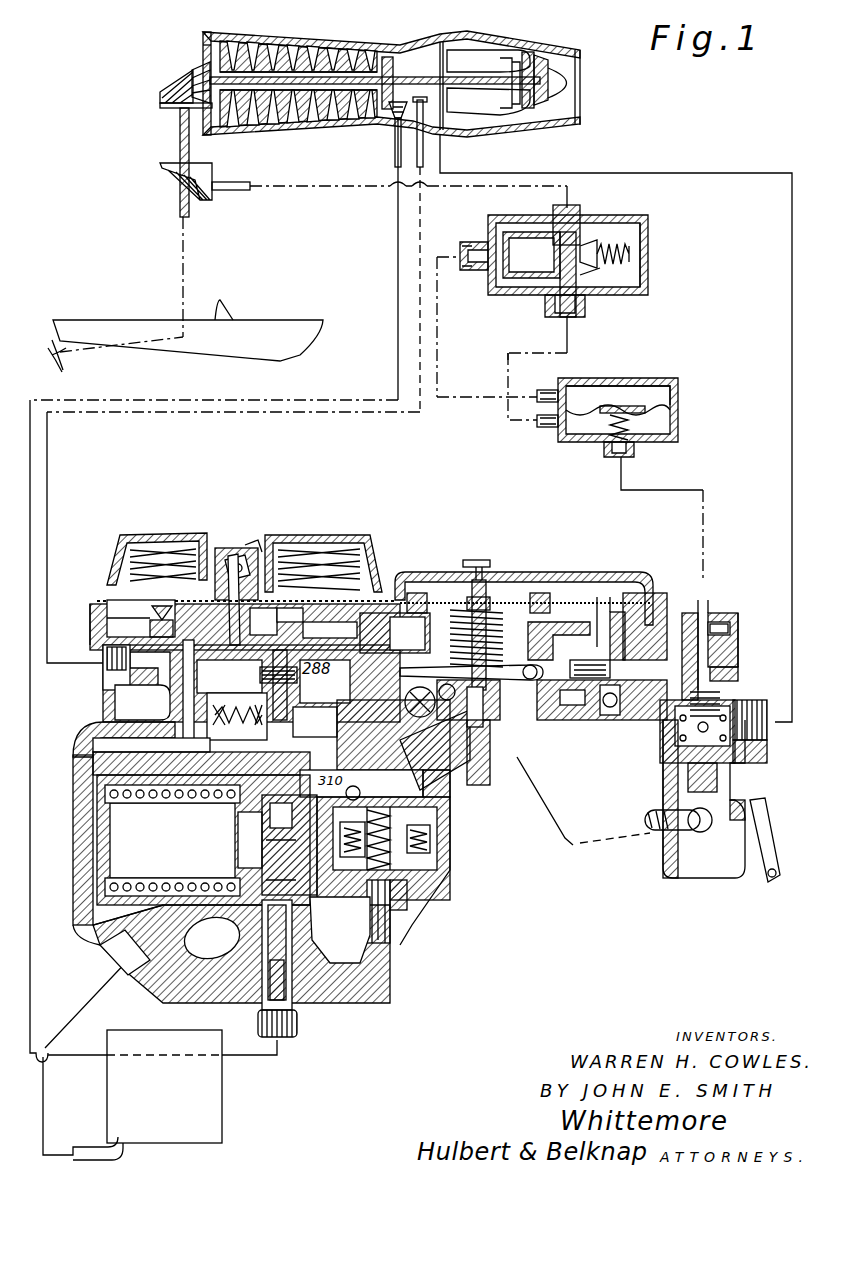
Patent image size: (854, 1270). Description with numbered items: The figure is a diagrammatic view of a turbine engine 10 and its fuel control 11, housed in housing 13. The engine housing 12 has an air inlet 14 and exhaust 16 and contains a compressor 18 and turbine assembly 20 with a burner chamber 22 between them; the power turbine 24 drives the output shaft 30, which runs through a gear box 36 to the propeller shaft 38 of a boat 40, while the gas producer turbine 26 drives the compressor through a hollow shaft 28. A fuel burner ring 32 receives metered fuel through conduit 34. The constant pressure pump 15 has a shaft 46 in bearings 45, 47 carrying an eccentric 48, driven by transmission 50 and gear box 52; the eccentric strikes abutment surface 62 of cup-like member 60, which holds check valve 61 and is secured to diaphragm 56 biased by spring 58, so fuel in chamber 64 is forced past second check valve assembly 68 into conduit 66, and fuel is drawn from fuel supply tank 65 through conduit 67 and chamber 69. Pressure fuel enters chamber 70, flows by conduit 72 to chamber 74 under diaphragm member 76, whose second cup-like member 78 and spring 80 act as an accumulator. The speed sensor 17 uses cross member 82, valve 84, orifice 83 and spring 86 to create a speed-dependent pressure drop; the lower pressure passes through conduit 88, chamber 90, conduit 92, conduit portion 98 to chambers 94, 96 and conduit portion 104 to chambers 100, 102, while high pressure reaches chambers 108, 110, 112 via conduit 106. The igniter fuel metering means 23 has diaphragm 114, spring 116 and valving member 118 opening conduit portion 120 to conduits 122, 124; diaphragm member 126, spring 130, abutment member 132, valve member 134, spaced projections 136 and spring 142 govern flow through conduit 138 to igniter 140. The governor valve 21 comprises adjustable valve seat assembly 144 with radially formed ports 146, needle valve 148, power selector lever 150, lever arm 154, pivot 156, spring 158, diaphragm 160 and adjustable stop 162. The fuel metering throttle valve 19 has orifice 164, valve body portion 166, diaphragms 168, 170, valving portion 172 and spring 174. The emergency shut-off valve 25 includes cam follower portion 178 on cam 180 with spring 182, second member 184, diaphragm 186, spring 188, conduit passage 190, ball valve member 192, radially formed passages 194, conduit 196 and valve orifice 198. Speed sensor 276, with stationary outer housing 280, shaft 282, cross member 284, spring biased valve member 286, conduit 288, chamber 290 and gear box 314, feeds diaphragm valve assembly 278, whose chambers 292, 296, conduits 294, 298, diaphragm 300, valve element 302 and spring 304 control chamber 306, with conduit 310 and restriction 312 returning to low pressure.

The turbine engine 10 is at (322, 42).
The fuel control 11 is at (486, 890).
The housing 12 is at (388, 56).
The housing 13 is at (335, 540).
The air inlet 14 is at (208, 46).
The constant pressure pump 15 is at (417, 934).
The exhaust 16 is at (582, 105).
The speed sensor 17 is at (333, 742).
The compressor 18 is at (290, 128).
The fuel metering throttle valve 19 is at (622, 590).
The turbine assembly 20 is at (580, 70).
The governor valve 21 is at (530, 596).
The burner chamber 22 is at (512, 100).
The igniter fuel metering means 23 is at (226, 540).
The power turbine 24 is at (545, 105).
The emergency shut-off valve 25 is at (652, 810).
The gas producer turbine 26 is at (527, 110).
The hollow shaft 28 is at (452, 56).
The output shaft 30 is at (468, 70).
The fuel burner ring 32 is at (490, 100).
The conduit 34 is at (740, 168).
The gear box 36 is at (161, 96).
The propeller shaft 38 is at (138, 348).
The boat 40 is at (252, 318).
The bearing 45 is at (318, 780).
The shaft 46 is at (264, 975).
The bearing 47 is at (230, 940).
The eccentric 48 is at (225, 832).
The transmission 50 is at (82, 944).
The gear box 52 is at (392, 118).
The diaphragm 56 is at (410, 912).
The spring 58 is at (408, 893).
The cup-like member 60 is at (320, 920).
The check valve 61 is at (296, 850).
The abutment surface 62 is at (290, 826).
The chamber 64 is at (448, 822).
The fuel supply tank 65 is at (224, 1125).
The conduit 66 is at (448, 803).
The conduit 67 is at (82, 984).
The second check valve assembly 68 is at (448, 866).
The chamber 69 is at (108, 950).
The chamber 70 is at (150, 712).
The conduit 72 is at (100, 728).
The chamber 74 is at (80, 905).
The diaphragm member 76 is at (76, 775).
The second cup-like member 78 is at (150, 860).
The spring 80 is at (126, 800).
The cross member 82 is at (340, 688).
The orifice 83 is at (255, 740).
The valve 84 is at (294, 712).
The spring 86 is at (228, 740).
The conduit 88 is at (190, 668).
The chamber 90 is at (455, 630).
The conduit 92 is at (248, 548).
The chamber 94 is at (126, 560).
The chamber 96 is at (372, 570).
The conduit portion 98 is at (262, 570).
The chamber 100 is at (640, 596).
The chamber 102 is at (640, 630).
The conduit portion 104 is at (548, 595).
The conduit 106 is at (383, 630).
The chamber 108 is at (432, 572).
The chamber 110 is at (585, 590).
The chamber 112 is at (370, 590).
The diaphragm 114 is at (286, 548).
The spring 116 is at (280, 556).
The valving member 118 is at (366, 560).
The conduit portion 120 is at (306, 626).
The conduit 122 is at (234, 695).
The conduit 124 is at (386, 752).
The diaphragm member 126 is at (104, 600).
The spring 130 is at (122, 538).
The abutment member 132 is at (108, 590).
The valve member 134 is at (148, 630).
The spaced projections 136 is at (96, 614).
The conduit 138 is at (103, 680).
The igniter 140 is at (395, 160).
The spring 142 is at (128, 650).
The adjustable valve seat assembly 144 is at (490, 770).
The radially formed ports 146 is at (470, 720).
The needle valve 148 is at (490, 725).
The power selector lever 150 is at (762, 880).
The lever arm 154 is at (383, 644).
The pivot 156 is at (538, 682).
The spring 158 is at (503, 600).
The diaphragm 160 is at (420, 593).
The adjustable stop 162 is at (484, 557).
The orifice 164 is at (600, 708).
The valve body portion 166 is at (636, 618).
The diaphragm 168 is at (640, 588).
The diaphragm 170 is at (684, 612).
The valving portion 172 is at (600, 716).
The spring 174 is at (606, 718).
The cam follower portion 178 is at (730, 775).
The cam 180 is at (698, 832).
The spring 182 is at (664, 750).
The second member 184 is at (660, 730).
The diaphragm 186 is at (728, 690).
The spring 188 is at (728, 720).
The conduit passage 190 is at (767, 725).
The ball valve member 192 is at (662, 776).
The radially formed passages 194 is at (767, 750).
The conduit 196 is at (706, 532).
The valve orifice 198 is at (655, 705).
The speed sensor 276 is at (638, 302).
The diaphragm valve assembly 278 is at (703, 424).
The stationary outer housing 280 is at (608, 222).
The shaft 282 is at (556, 210).
The cross member 284 is at (522, 285).
The spring biased valve member 286 is at (635, 250).
The conduit 288 is at (470, 275).
The chamber 290 is at (610, 290).
The chamber 292 is at (636, 388).
The conduit 294 is at (476, 398).
The chamber 296 is at (590, 440).
The conduit 298 is at (528, 355).
The diaphragm 300 is at (672, 410).
The valve element 302 is at (612, 405).
The spring 304 is at (640, 440).
The chamber 306 is at (738, 670).
The conduit 310 is at (735, 622).
The restriction 312 is at (740, 612).
The gear box 314 is at (203, 198).